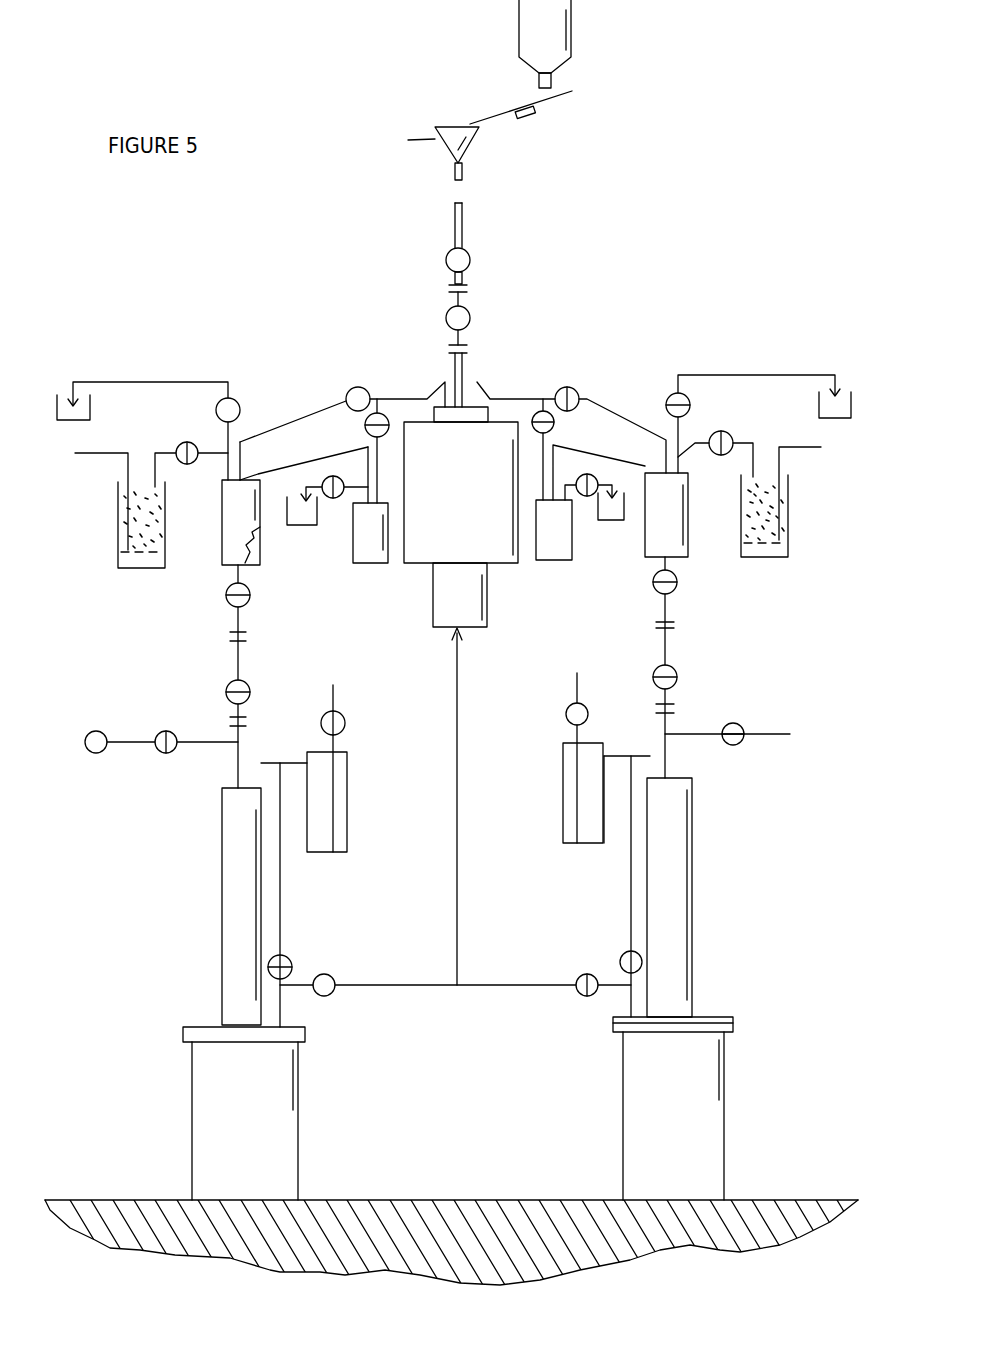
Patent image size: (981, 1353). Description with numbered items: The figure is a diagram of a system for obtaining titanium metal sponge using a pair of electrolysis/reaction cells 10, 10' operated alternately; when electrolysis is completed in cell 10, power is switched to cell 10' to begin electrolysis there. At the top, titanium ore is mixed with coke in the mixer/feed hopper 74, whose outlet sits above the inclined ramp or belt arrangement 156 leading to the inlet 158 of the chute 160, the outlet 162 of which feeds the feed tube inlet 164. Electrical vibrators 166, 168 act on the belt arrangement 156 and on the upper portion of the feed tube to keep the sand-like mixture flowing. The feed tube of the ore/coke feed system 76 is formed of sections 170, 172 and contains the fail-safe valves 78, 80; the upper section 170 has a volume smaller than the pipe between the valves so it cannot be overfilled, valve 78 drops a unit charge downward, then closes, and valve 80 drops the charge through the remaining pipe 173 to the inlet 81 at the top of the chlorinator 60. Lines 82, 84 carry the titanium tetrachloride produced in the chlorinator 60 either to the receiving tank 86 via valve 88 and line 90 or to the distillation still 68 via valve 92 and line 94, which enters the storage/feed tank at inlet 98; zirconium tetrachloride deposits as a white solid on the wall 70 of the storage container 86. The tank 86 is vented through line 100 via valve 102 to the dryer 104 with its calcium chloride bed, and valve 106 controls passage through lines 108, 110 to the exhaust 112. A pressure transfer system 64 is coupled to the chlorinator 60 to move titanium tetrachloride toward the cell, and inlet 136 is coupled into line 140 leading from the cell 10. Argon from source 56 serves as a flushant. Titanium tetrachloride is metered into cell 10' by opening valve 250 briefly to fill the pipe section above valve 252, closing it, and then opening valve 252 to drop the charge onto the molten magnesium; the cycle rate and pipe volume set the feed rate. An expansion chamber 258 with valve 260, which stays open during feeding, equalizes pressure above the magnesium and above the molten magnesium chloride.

The mixer/feed hopper 74 is at (577, 54).
The inclined ramp or belt arrangement 156 is at (571, 97).
The electrical vibrator 166 is at (527, 118).
The chute inlet 158 is at (447, 126).
The chute 160 is at (403, 153).
The chute outlet 162 is at (463, 173).
The feed tube inlet 164 is at (462, 206).
The upper feed pipe section 170 is at (462, 240).
The ore/coke feed system 76 is at (529, 263).
The valve 78 is at (447, 257).
The feed tube section 172 is at (466, 283).
The electrical vibrator 168 is at (448, 283).
The valve 80 is at (470, 320).
The remaining pipe 173 is at (467, 345).
The line 82 is at (443, 382).
The chlorinator 60 is at (461, 485).
The line 84 is at (402, 396).
The valve 88 is at (362, 388).
The pressure transfer system 64 is at (345, 384).
The chlorinator inlet 81 is at (475, 390).
The line 90 is at (293, 433).
The valve 92 is at (366, 427).
The line 94 is at (382, 464).
The distillation still 68 is at (356, 565).
The inlet 136 is at (484, 596).
The line 140 is at (480, 906).
The electrolysis/reaction cell 10 is at (713, 1079).
The line 110 is at (148, 380).
The exhaust 112 is at (62, 392).
The valve 106 is at (222, 399).
The line 108 is at (232, 430).
The vent line 100 is at (222, 462).
The valve 102 is at (187, 465).
The dryer 104 is at (118, 512).
The receiving tank 86 is at (222, 543).
The wall 70 is at (262, 553).
The inlet 98 is at (242, 478).
The valve 250 is at (250, 594).
The valve 252 is at (264, 684).
The argon source 56 is at (98, 731).
The expansion chamber 258 is at (347, 758).
The valve 260 is at (289, 959).
The electrolysis/reaction cell 10' is at (230, 1085).